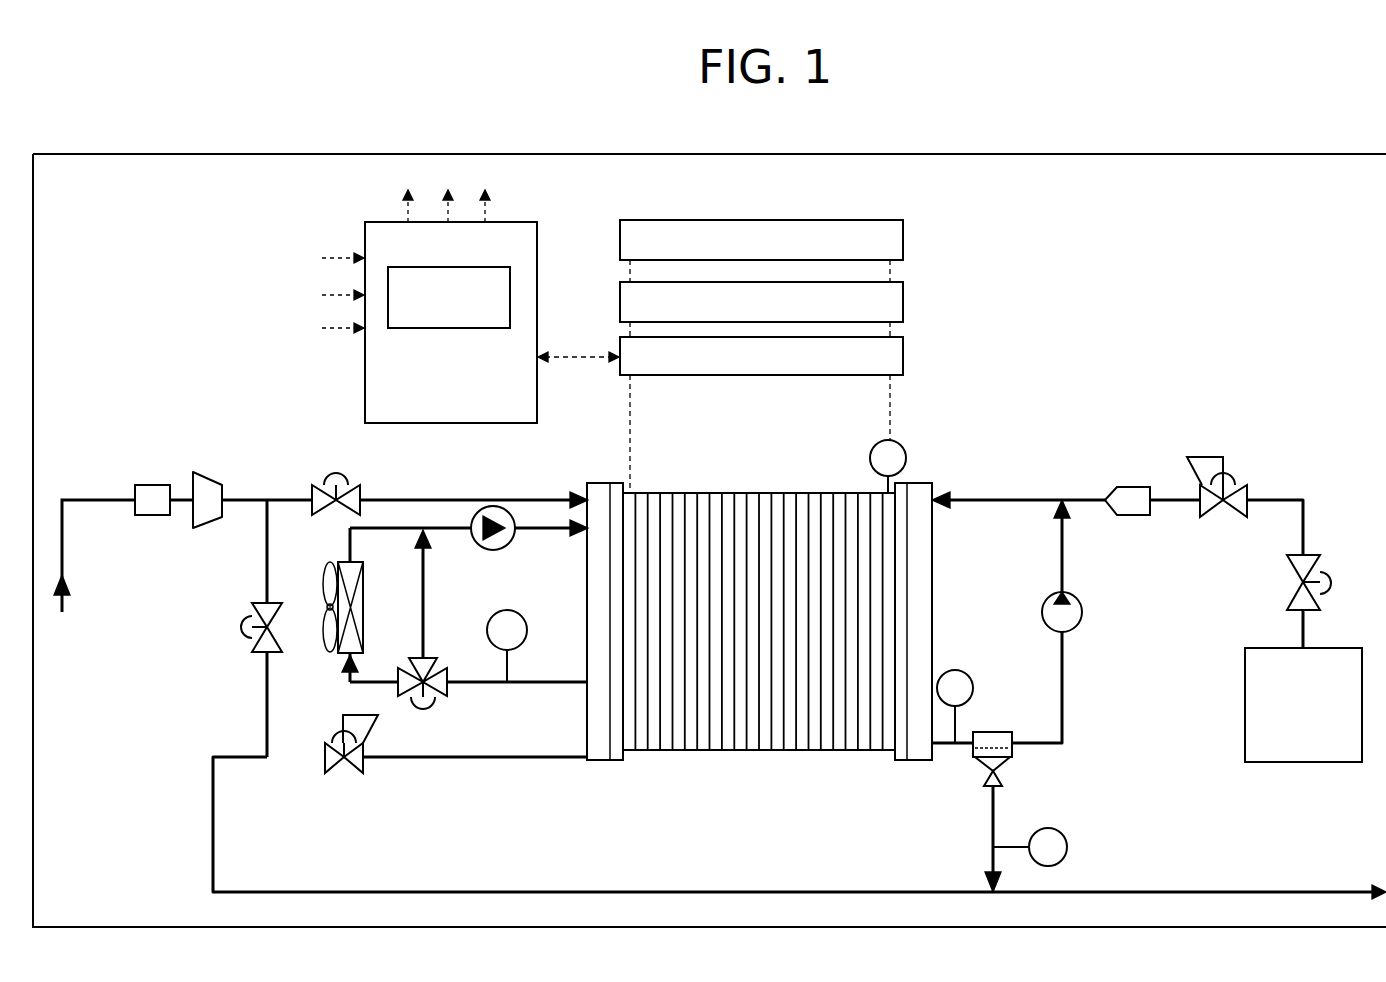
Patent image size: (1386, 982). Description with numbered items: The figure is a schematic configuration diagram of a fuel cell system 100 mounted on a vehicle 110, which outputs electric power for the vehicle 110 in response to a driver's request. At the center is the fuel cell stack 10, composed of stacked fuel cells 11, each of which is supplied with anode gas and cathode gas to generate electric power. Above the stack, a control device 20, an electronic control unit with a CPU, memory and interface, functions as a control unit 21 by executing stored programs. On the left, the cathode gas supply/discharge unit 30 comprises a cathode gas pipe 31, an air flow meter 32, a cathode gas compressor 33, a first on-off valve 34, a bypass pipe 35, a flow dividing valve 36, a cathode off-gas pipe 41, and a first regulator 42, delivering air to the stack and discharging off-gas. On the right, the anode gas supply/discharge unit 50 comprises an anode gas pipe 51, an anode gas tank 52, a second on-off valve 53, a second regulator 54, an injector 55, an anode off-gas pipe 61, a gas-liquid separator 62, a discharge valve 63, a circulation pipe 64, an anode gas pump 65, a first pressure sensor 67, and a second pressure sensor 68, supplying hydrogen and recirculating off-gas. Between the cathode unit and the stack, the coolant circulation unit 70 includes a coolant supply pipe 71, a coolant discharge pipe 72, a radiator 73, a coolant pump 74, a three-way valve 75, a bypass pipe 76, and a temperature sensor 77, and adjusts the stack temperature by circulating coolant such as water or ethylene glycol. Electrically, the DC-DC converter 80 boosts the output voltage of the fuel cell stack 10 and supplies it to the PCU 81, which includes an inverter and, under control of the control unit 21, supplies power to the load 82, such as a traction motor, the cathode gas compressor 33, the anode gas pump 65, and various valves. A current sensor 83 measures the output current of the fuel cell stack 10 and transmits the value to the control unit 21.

The fuel cell stack 10 is at (759, 659).
The fuel cell 11 is at (755, 750).
The control device 20 is at (583, 268).
The control unit 21 is at (455, 267).
The cathode gas supply/discharge unit 30 is at (316, 586).
The cathode gas pipe 31 is at (64, 540).
The air flow meter 32 is at (155, 485).
The cathode gas compressor 33 is at (208, 472).
The first on-off valve 34 is at (358, 482).
The bypass pipe 35 is at (265, 597).
The flow dividing valve 36 is at (240, 628).
The cathode off-gas pipe 41 is at (799, 807).
The first regulator 42 is at (331, 737).
The anode gas supply/discharge unit 50 is at (1149, 670).
The anode gas pipe 51 is at (1305, 530).
The anode gas tank 52 is at (1322, 648).
The second on-off valve 53 is at (1300, 590).
The second regulator 54 is at (1250, 485).
The injector 55 is at (1130, 487).
The anode off-gas pipe 61 is at (992, 820).
The gas-liquid separator 62 is at (1012, 760).
The discharge valve 63 is at (1000, 785).
The circulation pipe 64 is at (1064, 690).
The anode gas pump 65 is at (1041, 612).
The first pressure sensor 67 is at (974, 688).
The second pressure sensor 68 is at (1068, 847).
The coolant circulation unit 70 is at (435, 621).
The coolant supply pipe 71 is at (540, 531).
The coolant discharge pipe 72 is at (533, 684).
The radiator 73 is at (338, 572).
The coolant pump 74 is at (505, 549).
The three-way valve 75 is at (432, 708).
The bypass pipe 76 is at (425, 600).
The temperature sensor 77 is at (528, 628).
The DC-DC converter 80 is at (905, 357).
The power control unit (PCU) 81 is at (905, 300).
The load 82 is at (905, 235).
The current sensor 83 is at (906, 460).
The fuel cell system 100 is at (1097, 247).
The vehicle 110 is at (1185, 154).